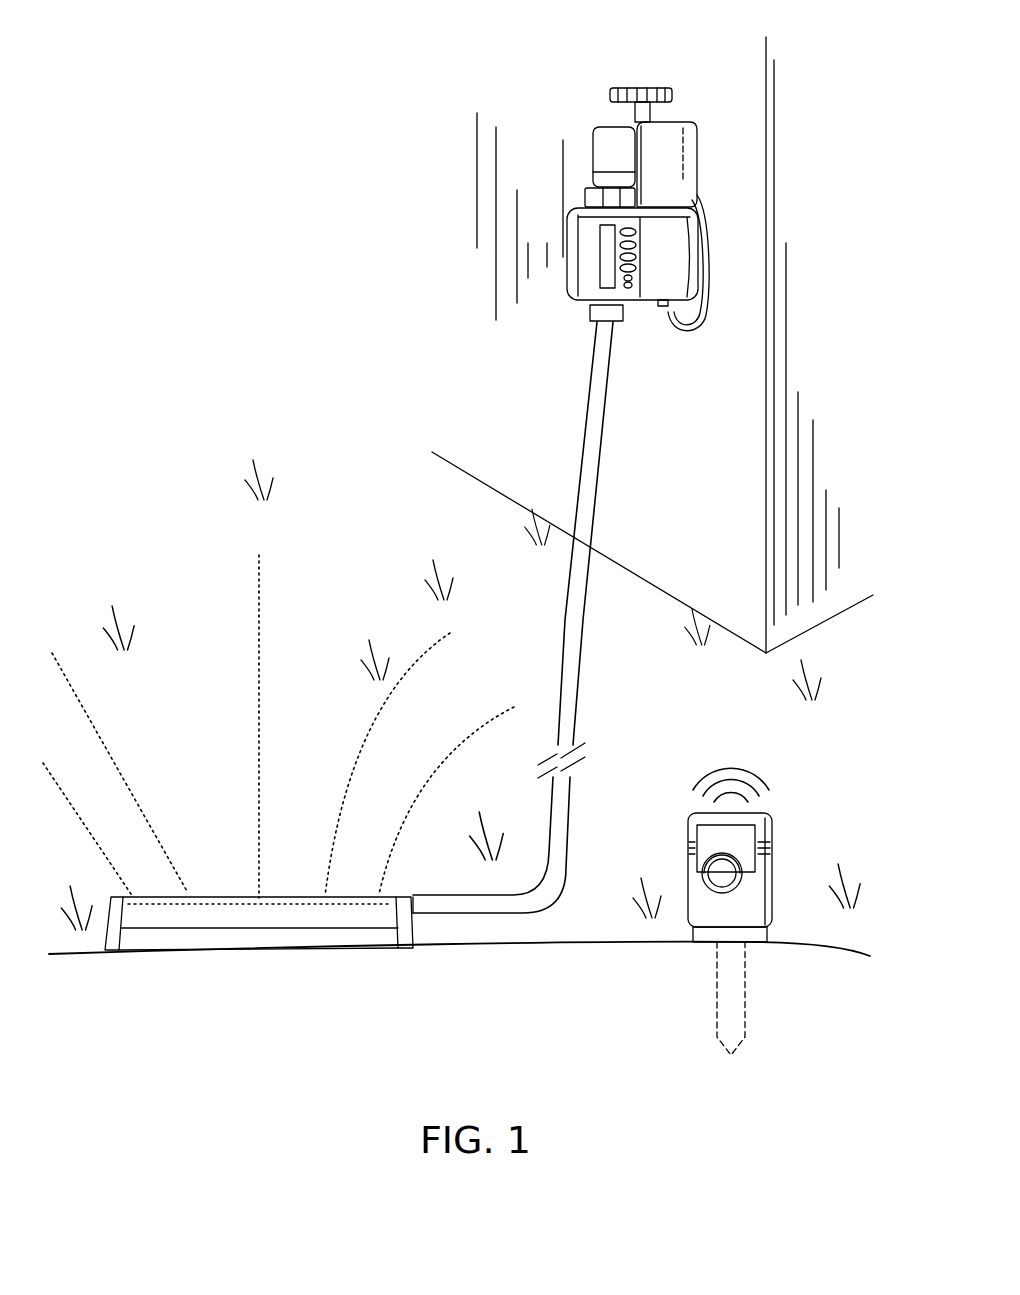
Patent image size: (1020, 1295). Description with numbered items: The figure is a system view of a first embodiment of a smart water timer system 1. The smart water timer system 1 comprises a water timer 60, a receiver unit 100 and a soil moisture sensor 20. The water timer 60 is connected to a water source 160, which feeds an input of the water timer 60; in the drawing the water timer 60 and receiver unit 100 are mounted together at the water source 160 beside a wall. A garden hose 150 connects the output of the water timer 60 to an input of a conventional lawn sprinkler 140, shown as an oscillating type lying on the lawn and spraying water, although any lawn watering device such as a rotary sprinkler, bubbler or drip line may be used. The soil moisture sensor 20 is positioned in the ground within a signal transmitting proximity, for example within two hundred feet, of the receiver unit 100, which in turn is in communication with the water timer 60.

The smart water timer system 1 is at (178, 134).
The water source 160 is at (630, 87).
The receiver unit 100 is at (697, 168).
The water timer 60 is at (593, 407).
The garden hose 150 is at (578, 688).
The lawn sprinkler 140 is at (213, 952).
The soil moisture sensor 20 is at (775, 868).